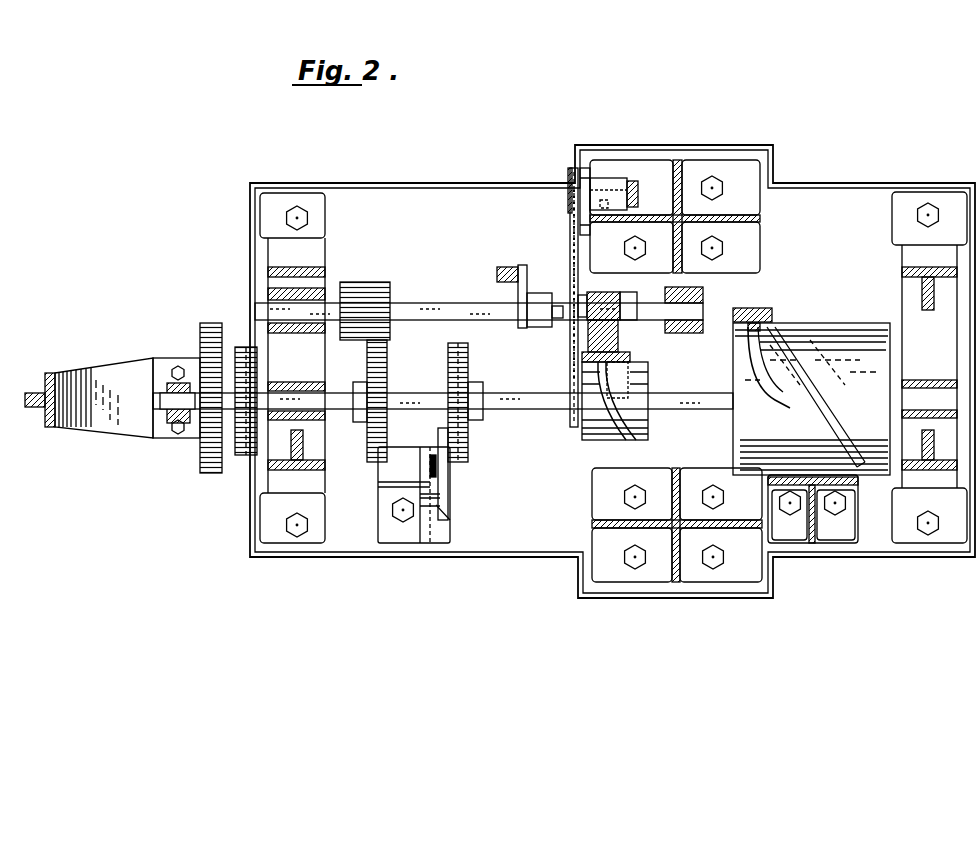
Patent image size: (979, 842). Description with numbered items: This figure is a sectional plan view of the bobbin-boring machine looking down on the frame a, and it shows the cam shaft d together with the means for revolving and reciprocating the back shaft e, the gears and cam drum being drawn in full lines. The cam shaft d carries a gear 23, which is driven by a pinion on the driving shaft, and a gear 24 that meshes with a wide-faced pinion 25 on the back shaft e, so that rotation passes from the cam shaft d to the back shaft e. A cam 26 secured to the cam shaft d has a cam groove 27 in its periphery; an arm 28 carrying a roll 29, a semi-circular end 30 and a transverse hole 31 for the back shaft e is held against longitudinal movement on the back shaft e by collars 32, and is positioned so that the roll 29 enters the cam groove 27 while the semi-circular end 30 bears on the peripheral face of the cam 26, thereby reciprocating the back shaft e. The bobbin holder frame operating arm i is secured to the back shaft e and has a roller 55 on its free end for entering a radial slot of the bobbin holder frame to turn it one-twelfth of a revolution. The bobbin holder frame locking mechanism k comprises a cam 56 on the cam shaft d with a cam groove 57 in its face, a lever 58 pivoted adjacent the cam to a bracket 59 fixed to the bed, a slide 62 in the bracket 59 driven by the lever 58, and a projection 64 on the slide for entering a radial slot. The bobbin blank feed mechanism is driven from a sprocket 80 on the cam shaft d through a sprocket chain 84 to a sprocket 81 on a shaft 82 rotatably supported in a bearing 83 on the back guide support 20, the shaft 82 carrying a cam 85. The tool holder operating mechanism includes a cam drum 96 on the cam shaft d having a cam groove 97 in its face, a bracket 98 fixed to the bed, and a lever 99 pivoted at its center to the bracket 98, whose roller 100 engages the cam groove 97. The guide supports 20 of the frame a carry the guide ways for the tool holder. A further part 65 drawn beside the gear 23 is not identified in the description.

The frame a is at (250, 203).
The guide supports 20 is at (683, 165).
The gear 23 is at (200, 337).
The gear 24 is at (387, 366).
The wide-faced pinion 25 is at (369, 282).
The cam 26 is at (90, 425).
The cam groove 27 is at (618, 440).
The arm 28 is at (283, 266).
The roll 29 is at (630, 360).
The semi-circular end 30 is at (628, 380).
The transverse hole 31 is at (603, 292).
The collars 32 is at (630, 293).
The roller 55 is at (506, 267).
The cam 56 is at (468, 358).
The cam groove 57 is at (452, 360).
The lever 58 is at (448, 476).
The bracket 59 is at (385, 512).
The slide 62 is at (420, 496).
The projection 64 is at (430, 470).
The gear 65 is at (244, 457).
The sprocket 80 is at (573, 427).
The sprocket 81 is at (571, 170).
The shaft 82 is at (638, 192).
The bearing 83 is at (608, 178).
The sprocket chain 84 is at (572, 365).
The cam 85 is at (585, 168).
The cam drum 96 is at (853, 332).
The cam groove 97 is at (820, 365).
The bracket 98 is at (830, 530).
The lever 99 is at (772, 314).
The roller 100 is at (754, 322).
The cam shaft d is at (532, 409).
The back shaft e is at (450, 305).
The bobbin holder frame operating arm i is at (530, 272).
The bobbin holder frame locking mechanism k is at (450, 512).